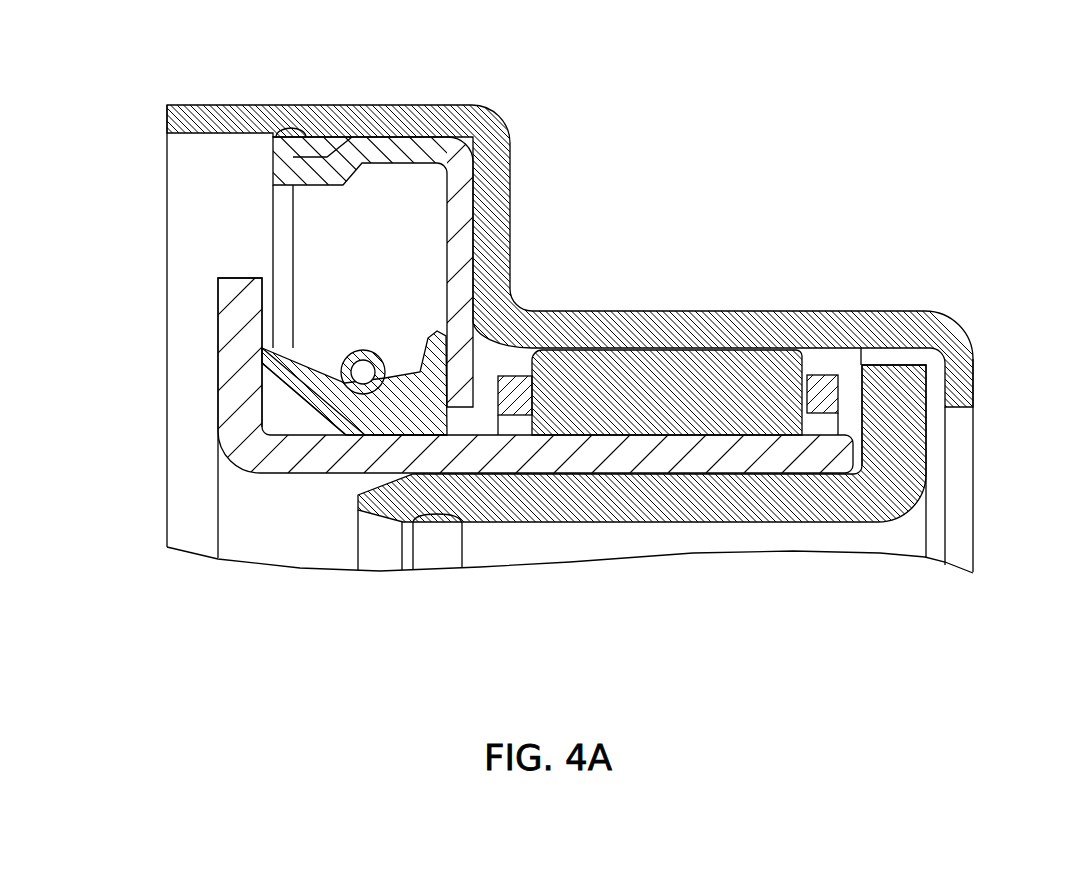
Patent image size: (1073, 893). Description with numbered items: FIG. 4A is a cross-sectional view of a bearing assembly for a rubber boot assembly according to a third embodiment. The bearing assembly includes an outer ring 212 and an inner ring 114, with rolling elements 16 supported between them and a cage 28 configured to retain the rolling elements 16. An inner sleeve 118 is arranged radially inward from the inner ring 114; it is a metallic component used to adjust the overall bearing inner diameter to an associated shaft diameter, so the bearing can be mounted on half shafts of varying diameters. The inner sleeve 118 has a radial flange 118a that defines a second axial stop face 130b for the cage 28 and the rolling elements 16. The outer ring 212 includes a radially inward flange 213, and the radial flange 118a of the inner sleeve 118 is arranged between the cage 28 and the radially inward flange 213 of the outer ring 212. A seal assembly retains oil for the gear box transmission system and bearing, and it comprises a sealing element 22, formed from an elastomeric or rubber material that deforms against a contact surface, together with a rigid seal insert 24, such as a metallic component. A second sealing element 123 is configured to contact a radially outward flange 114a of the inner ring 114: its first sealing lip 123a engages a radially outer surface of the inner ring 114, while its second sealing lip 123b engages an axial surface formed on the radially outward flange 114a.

The rolling elements 16 is at (700, 380).
The sealing element 22 is at (290, 133).
The seal insert 24 is at (456, 227).
The cage 28 is at (822, 392).
The inner ring 114 is at (388, 465).
The radially outward flange 114a is at (235, 340).
The inner sleeve 118 is at (798, 510).
The radial flange 118a is at (910, 438).
The second sealing element 123 is at (408, 400).
The first sealing lip 123a is at (440, 414).
The second sealing lip 123b is at (282, 378).
The second axial stop face 130b is at (862, 378).
The outer ring 212 is at (361, 120).
The radially inward flange 213 is at (957, 382).